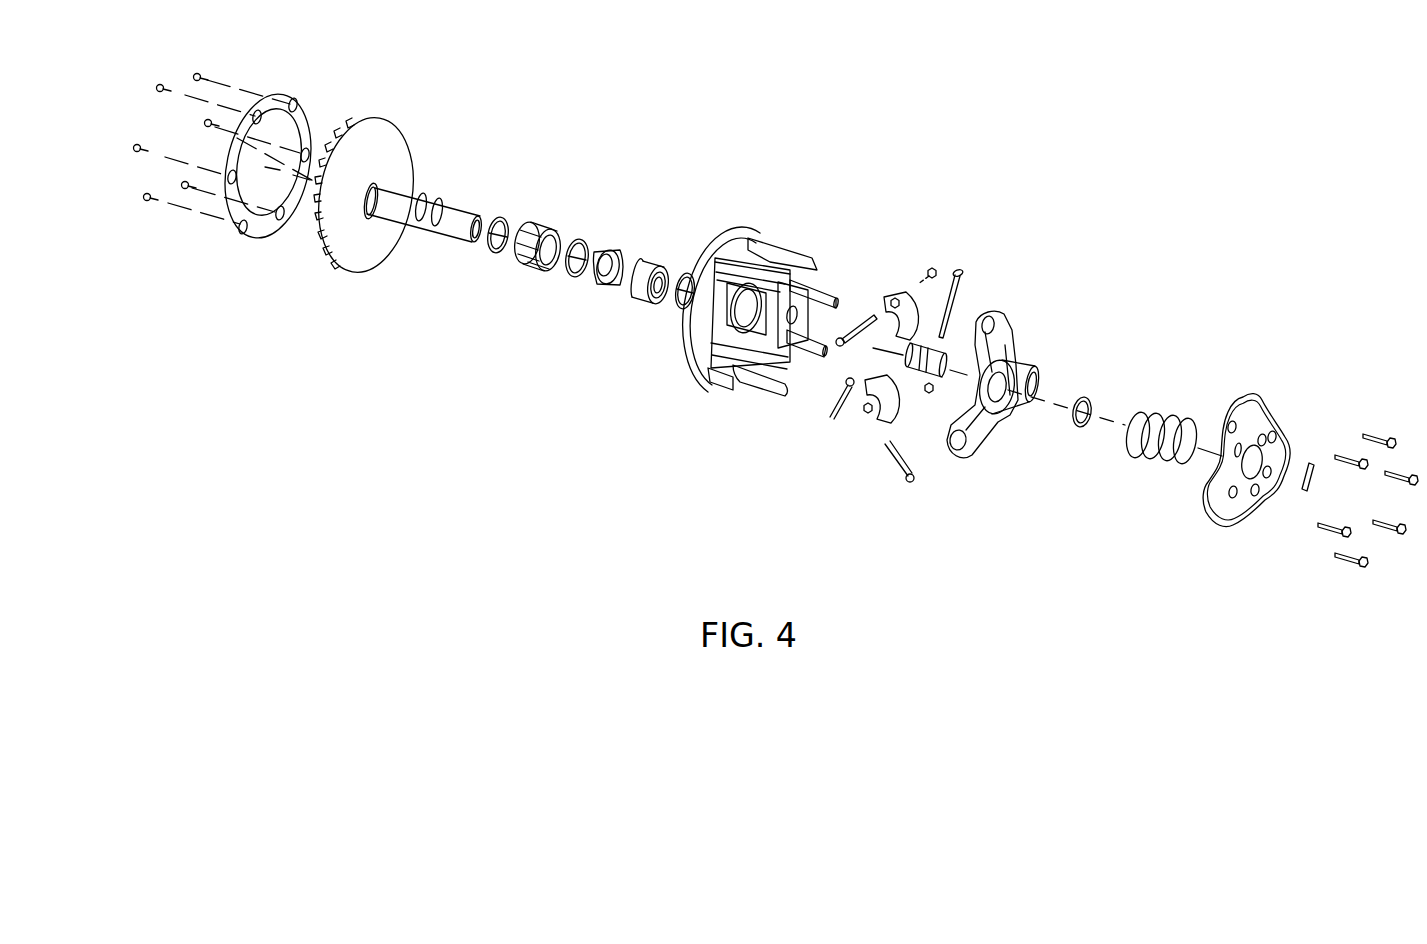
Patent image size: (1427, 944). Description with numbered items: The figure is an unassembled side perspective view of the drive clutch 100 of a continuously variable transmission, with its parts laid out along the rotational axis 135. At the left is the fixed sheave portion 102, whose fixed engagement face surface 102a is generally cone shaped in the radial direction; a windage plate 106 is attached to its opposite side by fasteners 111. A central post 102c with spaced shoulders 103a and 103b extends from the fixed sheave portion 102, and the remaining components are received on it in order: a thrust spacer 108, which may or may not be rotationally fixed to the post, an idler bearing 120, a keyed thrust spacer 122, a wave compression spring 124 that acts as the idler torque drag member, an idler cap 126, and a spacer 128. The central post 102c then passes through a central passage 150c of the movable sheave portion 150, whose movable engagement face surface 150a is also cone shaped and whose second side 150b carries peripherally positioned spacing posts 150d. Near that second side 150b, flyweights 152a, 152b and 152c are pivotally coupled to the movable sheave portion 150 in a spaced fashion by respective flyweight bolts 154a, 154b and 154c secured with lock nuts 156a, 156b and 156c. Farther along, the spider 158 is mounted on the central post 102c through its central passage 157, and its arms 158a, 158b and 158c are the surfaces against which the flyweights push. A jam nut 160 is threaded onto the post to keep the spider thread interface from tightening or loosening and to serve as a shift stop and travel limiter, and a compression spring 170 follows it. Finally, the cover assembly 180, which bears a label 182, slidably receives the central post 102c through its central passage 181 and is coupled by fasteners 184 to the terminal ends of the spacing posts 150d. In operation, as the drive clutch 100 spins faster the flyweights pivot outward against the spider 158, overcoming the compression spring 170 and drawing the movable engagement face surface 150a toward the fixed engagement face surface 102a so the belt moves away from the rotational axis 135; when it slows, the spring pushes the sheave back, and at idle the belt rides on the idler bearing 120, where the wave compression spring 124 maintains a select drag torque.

The drive clutch 100 is at (953, 141).
The fixed sheave portion 102 is at (423, 123).
The fixed engagement face surface 102a is at (350, 260).
The central post 102c is at (445, 233).
The first shoulder 103a is at (428, 198).
The second shoulder 103b is at (440, 211).
The windage plate 106 is at (263, 227).
The thrust spacer 108 is at (497, 253).
The fasteners 111 is at (162, 88).
The idler bearing 120 is at (525, 268).
The keyed thrust spacer 122 is at (573, 270).
The wave compression spring 124 is at (613, 252).
The idler cap 126 is at (632, 287).
The spacer 128 is at (673, 307).
The rotational axis 135 is at (1108, 424).
The movable sheave portion 150 is at (856, 230).
The movable engagement face surface 150a is at (743, 232).
The second side 150b is at (727, 373).
The central passage 150c is at (730, 333).
The spacing posts 150d is at (762, 390).
The flyweight 152a is at (883, 393).
The flyweight 152b is at (897, 297).
The flyweight 152c is at (943, 357).
The flyweight bolt 154a is at (898, 486).
The flyweight bolt 154b is at (860, 312).
The flyweight bolt 154c is at (957, 287).
The lock nut 156a is at (823, 417).
The lock nut 156b is at (936, 268).
The lock nut 156c is at (932, 393).
The central passage 157 is at (997, 382).
The spider 158 is at (983, 430).
The arm 158a is at (957, 453).
The arm 158b is at (1007, 318).
The arm 158c is at (1038, 380).
The jam nut 160 is at (1080, 427).
The compression spring 170 is at (1145, 455).
The cover assembly 180 is at (1220, 522).
The central passage 181 is at (1262, 440).
The label 182 is at (1305, 488).
The fasteners 184 is at (1387, 532).